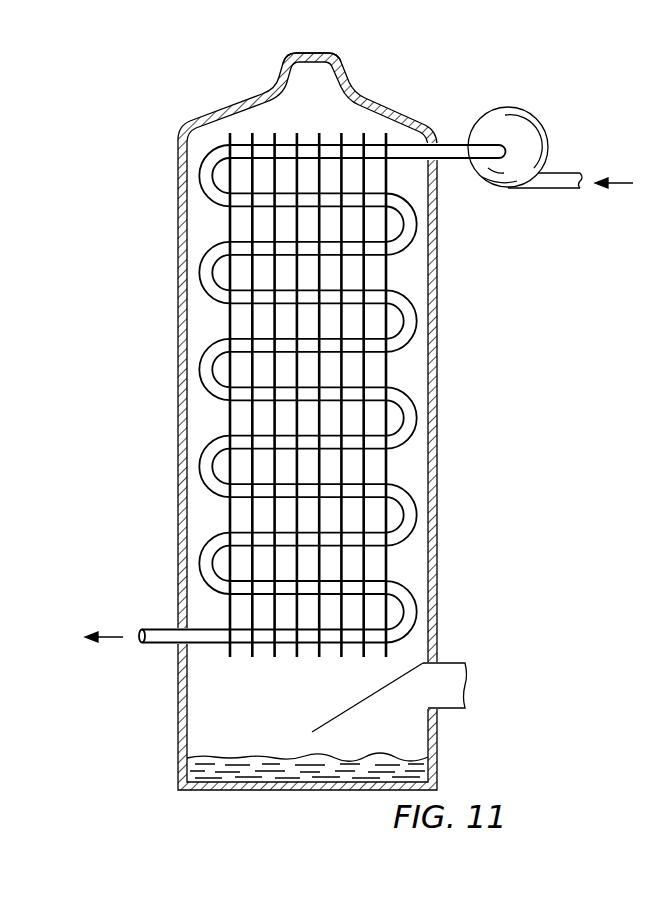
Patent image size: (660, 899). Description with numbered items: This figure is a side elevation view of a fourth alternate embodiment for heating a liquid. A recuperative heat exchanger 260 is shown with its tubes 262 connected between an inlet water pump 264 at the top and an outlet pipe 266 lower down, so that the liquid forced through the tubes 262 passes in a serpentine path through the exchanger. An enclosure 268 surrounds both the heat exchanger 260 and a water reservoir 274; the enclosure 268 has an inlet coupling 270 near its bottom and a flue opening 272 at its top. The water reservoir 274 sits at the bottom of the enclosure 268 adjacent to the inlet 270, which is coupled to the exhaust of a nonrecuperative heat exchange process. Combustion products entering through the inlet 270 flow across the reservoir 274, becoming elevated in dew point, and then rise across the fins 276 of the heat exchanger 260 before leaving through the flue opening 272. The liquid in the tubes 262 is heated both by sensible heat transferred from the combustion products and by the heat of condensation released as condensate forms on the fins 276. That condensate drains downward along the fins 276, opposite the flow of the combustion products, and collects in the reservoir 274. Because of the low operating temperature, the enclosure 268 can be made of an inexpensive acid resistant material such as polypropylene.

The recuperative heat exchanger 260 is at (413, 397).
The tubes 262 is at (407, 312).
The inlet water pump 264 is at (538, 160).
The outlet pipe 266 is at (162, 643).
The enclosure 268 is at (372, 102).
The inlet coupling 270 is at (443, 662).
The flue opening 272 is at (310, 70).
The water reservoir 274 is at (420, 772).
The fins 276 is at (387, 470).